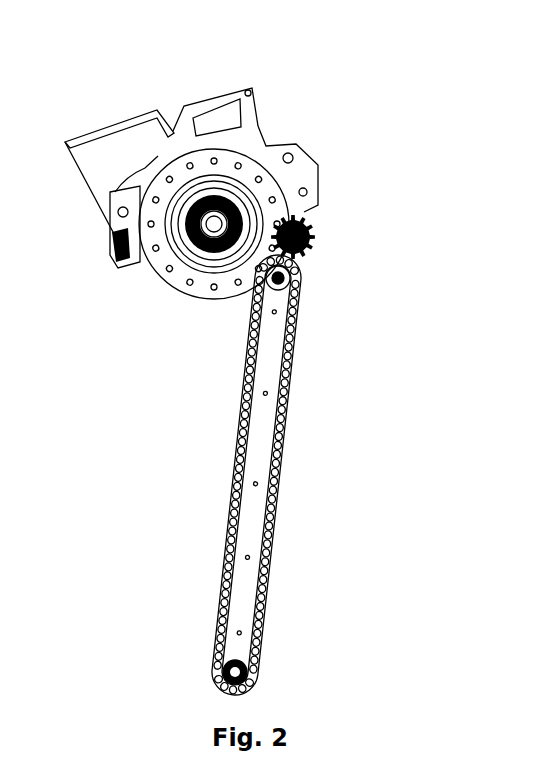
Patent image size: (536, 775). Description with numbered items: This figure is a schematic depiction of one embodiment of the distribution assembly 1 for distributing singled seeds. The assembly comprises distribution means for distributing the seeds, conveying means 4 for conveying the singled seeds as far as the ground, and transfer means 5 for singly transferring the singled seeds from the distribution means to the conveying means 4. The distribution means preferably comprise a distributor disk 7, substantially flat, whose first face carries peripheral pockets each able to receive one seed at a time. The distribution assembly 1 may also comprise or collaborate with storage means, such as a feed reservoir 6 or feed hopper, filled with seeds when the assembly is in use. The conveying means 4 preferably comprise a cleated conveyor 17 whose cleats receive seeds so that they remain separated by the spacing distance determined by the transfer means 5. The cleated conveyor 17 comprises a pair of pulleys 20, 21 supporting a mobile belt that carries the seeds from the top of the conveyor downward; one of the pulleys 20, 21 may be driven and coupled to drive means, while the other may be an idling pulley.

The distribution assembly 1 is at (336, 115).
The conveying means 4 is at (303, 356).
The transfer means 5 is at (326, 215).
The feed reservoir 6 is at (117, 146).
The distributor disk 7 is at (210, 155).
The cleated conveyor 17 is at (252, 527).
The pulley 20 is at (282, 278).
The pulley 21 is at (223, 702).